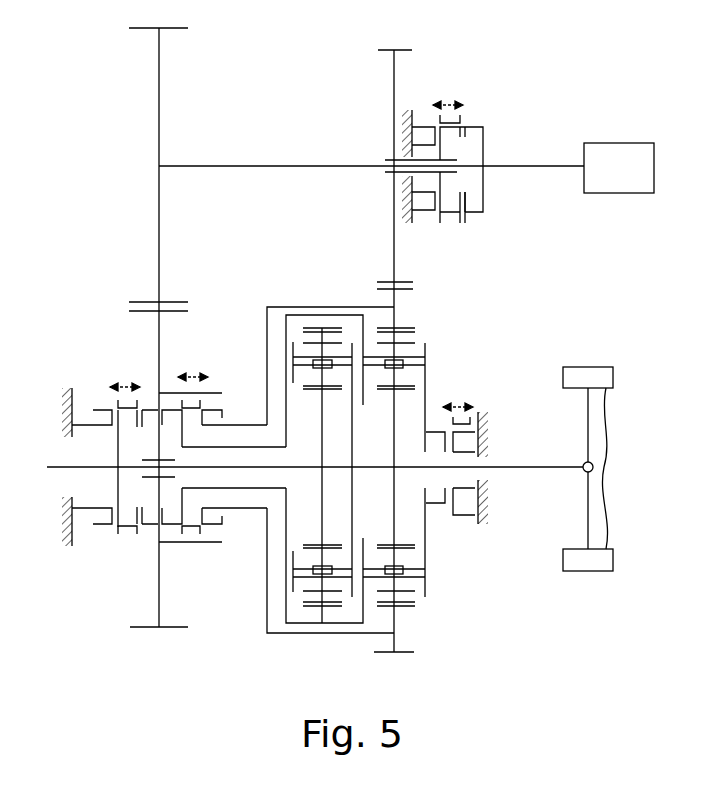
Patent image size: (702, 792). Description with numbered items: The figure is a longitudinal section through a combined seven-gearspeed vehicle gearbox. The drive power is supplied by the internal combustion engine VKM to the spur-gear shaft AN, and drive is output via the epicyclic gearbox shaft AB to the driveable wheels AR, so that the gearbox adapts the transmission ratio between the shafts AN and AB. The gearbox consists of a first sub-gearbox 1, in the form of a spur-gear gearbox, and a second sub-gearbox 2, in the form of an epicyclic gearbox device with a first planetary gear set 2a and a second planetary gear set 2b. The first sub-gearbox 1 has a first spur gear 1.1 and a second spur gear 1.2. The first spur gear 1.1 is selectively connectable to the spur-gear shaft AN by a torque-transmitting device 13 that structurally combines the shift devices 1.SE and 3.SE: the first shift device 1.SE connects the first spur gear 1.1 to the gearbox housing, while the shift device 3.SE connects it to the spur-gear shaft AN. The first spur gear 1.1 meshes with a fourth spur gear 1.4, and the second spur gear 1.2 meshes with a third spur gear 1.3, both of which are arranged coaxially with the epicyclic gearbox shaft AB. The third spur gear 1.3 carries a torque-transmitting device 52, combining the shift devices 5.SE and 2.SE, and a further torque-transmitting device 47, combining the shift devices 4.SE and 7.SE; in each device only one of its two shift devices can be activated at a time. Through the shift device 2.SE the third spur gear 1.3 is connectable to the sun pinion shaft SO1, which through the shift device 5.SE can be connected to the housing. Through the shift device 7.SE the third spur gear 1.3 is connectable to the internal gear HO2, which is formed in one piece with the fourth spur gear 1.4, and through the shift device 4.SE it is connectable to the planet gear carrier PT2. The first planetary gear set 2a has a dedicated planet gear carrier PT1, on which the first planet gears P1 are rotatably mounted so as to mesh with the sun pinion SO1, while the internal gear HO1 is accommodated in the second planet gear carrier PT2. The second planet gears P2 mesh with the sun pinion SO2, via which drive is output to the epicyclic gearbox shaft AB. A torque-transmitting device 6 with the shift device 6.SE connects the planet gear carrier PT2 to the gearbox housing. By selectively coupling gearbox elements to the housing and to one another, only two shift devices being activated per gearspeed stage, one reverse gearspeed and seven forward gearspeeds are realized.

The first sub-gearbox 1 is at (513, 182).
The first spur gear 1.1 is at (394, 90).
The second spur gear 1.2 is at (162, 55).
The third spur gear 1.3 is at (159, 326).
The fourth spur gear 1.4 is at (403, 290).
The torque-transmitting device 13 is at (454, 80).
The first shift device 1.SE is at (433, 100).
The shift device 3.SE is at (478, 89).
The spur-gear shaft AN is at (548, 166).
The internal combustion engine VKM is at (619, 168).
The second sub-gearbox 2 is at (462, 348).
The first planetary gear set 2a is at (312, 638).
The second planetary gear set 2b is at (398, 658).
The internal gear HO1 is at (317, 330).
The internal gear HO2 is at (410, 332).
The sun pinion shaft SO1 is at (322, 418).
The sun pinion SO2 is at (349, 467).
The planet gear carrier PT1 is at (353, 426).
The planet gear carrier PT2 is at (286, 407).
The first planet gears P1 is at (302, 343).
The second planet gears P2 is at (410, 385).
The torque-transmitting device 52 is at (100, 355).
The torque-transmitting device 47 is at (175, 352).
The shift device 5.SE is at (91, 447).
The shift device 2.SE is at (137, 438).
The shift device 4.SE is at (190, 445).
The shift device 7.SE is at (234, 436).
The shift device 6.SE is at (457, 453).
The torque-transmitting device 6 is at (487, 395).
The epicyclic gearbox shaft AB is at (545, 467).
The driveable wheels AR is at (632, 471).